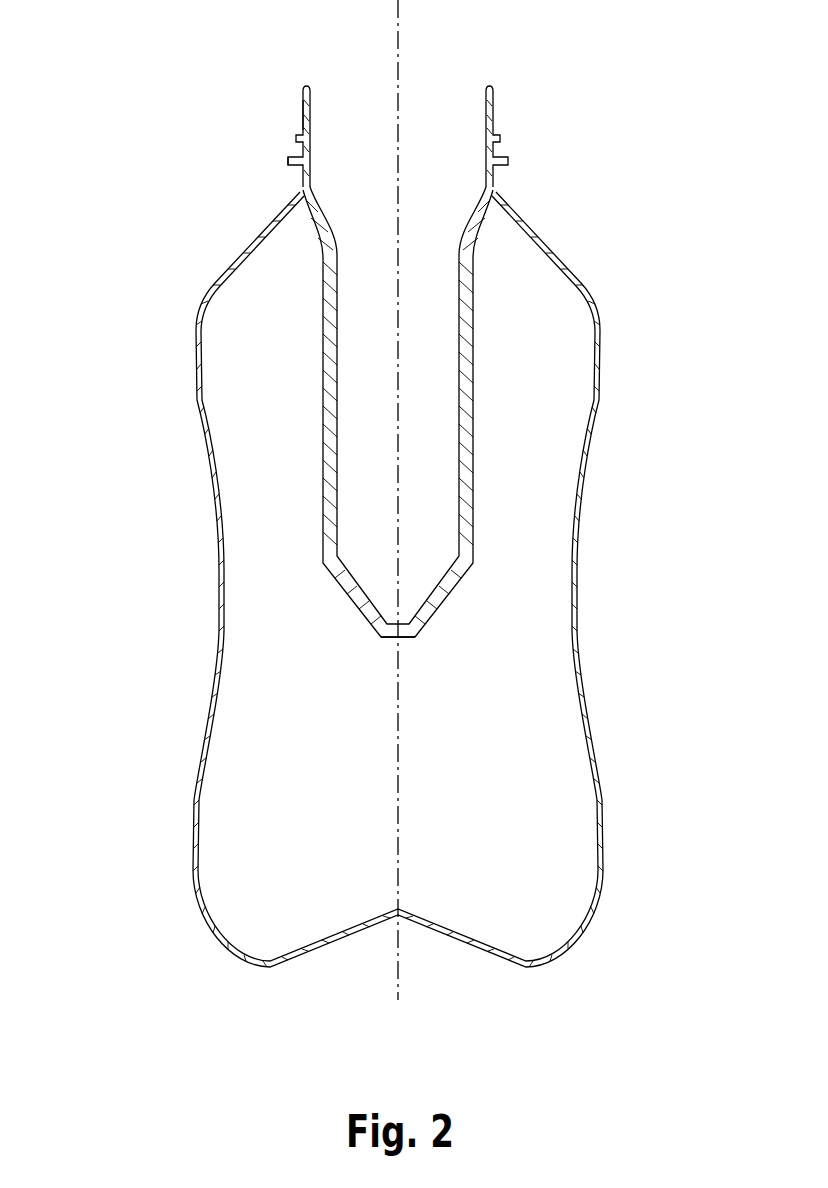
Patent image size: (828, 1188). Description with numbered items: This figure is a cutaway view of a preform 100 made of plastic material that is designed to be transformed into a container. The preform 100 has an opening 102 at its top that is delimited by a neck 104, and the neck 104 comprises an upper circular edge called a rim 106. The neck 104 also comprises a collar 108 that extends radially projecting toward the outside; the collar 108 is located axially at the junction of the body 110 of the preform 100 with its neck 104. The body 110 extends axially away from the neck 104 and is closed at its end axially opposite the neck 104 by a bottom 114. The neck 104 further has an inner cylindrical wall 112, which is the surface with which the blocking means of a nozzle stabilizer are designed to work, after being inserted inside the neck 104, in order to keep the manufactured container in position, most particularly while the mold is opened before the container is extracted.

The preform 100 is at (163, 177).
The opening 102 is at (448, 106).
The neck 104 is at (493, 118).
The rim 106 is at (305, 90).
The collar 108 is at (290, 160).
The body 110 is at (463, 477).
The inner cylindrical wall 112 is at (314, 115).
The bottom 114 is at (395, 638).